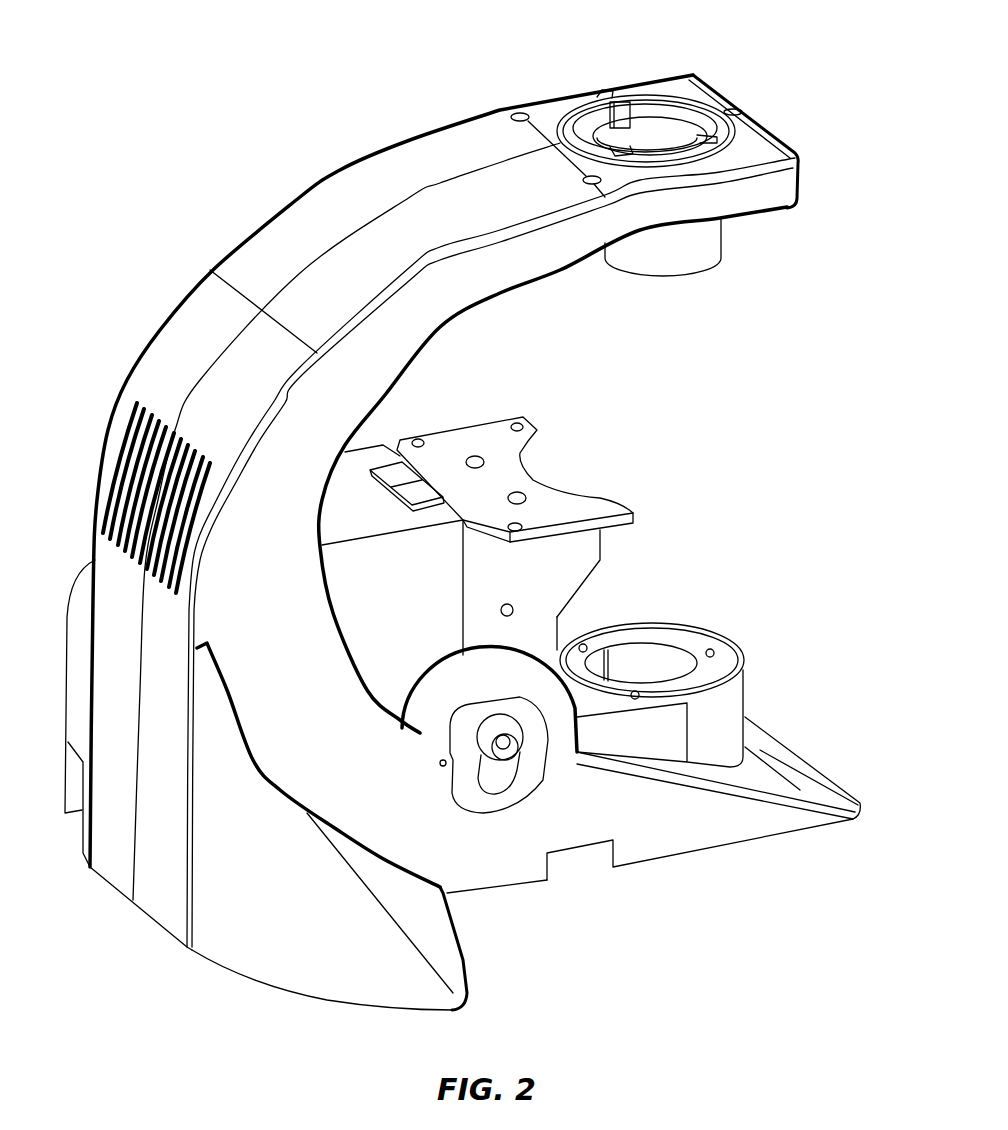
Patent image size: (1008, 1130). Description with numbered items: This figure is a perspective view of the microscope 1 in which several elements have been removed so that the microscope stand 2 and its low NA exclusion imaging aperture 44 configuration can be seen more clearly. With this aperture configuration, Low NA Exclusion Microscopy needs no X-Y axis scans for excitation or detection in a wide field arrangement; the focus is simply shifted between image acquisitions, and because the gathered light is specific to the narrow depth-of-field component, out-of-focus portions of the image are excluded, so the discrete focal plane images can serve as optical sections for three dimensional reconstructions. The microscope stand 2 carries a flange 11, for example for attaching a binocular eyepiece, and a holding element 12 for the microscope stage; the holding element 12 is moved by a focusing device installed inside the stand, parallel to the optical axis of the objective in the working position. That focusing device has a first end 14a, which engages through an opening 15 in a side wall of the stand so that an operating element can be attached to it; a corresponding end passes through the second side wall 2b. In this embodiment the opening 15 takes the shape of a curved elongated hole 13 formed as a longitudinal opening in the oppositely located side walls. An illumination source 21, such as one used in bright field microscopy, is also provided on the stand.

The microscope 1 is at (186, 136).
The microscope stand 2 is at (167, 347).
The second side wall 2b is at (343, 170).
The flange 11 is at (680, 113).
The holding element 12 is at (497, 437).
The curved elongated hole 13 is at (515, 800).
The first end 14a is at (521, 724).
The opening 15 is at (488, 777).
The illumination source 21 is at (663, 667).
The low NA exclusion imaging aperture 44 is at (713, 233).